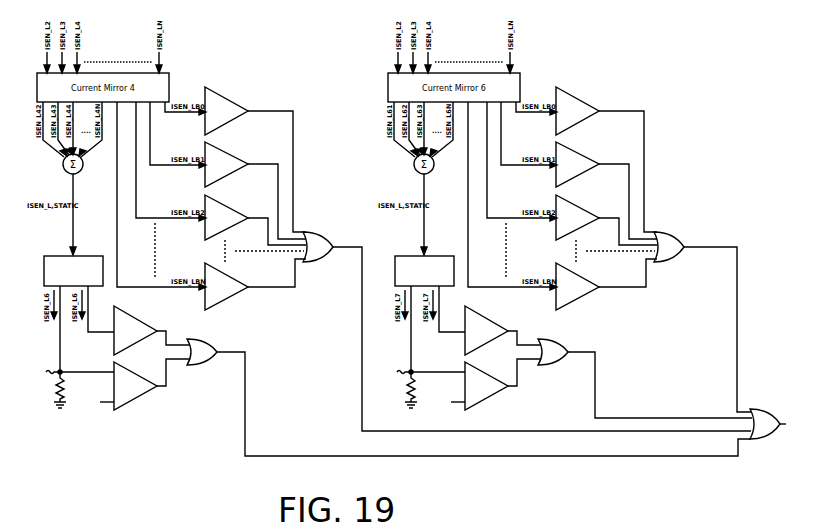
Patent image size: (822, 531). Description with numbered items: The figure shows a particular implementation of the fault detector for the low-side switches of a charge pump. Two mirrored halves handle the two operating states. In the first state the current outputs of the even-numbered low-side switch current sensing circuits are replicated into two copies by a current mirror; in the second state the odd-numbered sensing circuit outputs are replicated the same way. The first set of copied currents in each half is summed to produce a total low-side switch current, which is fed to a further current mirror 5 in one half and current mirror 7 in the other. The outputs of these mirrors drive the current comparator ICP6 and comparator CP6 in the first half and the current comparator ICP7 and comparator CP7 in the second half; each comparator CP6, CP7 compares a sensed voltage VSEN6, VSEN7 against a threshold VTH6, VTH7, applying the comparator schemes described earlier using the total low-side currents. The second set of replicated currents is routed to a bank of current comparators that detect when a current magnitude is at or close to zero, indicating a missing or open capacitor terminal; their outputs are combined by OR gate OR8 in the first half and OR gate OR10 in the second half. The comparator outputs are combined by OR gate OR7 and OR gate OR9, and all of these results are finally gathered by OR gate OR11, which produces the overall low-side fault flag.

The current mirror 5 is at (73, 271).
The current mirror 7 is at (424, 271).
The comparator ICP6 is at (135, 330).
The comparator ICP7 is at (486, 330).
The comparator CP6 is at (135, 386).
The comparator CP7 is at (486, 386).
The OR gate OR7 is at (454, 393).
The OR gate OR8 is at (493, 271).
The OR gate OR9 is at (630, 374).
The OR gate OR10 is at (669, 261).
The OR gate OR11 is at (780, 424).
The voltage sense input VSEN6 is at (67, 388).
The voltage sense input VSEN7 is at (418, 388).
The threshold voltage VTH6 is at (99, 399).
The threshold voltage VTH7 is at (450, 399).